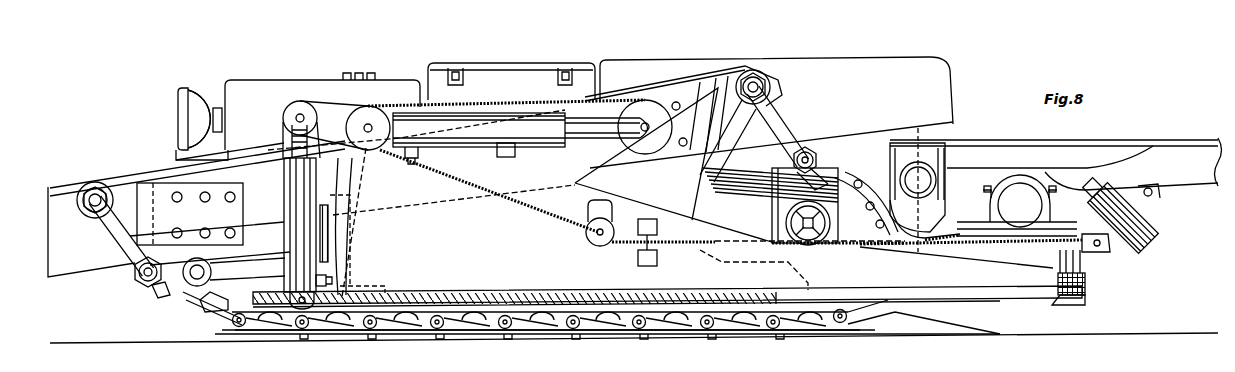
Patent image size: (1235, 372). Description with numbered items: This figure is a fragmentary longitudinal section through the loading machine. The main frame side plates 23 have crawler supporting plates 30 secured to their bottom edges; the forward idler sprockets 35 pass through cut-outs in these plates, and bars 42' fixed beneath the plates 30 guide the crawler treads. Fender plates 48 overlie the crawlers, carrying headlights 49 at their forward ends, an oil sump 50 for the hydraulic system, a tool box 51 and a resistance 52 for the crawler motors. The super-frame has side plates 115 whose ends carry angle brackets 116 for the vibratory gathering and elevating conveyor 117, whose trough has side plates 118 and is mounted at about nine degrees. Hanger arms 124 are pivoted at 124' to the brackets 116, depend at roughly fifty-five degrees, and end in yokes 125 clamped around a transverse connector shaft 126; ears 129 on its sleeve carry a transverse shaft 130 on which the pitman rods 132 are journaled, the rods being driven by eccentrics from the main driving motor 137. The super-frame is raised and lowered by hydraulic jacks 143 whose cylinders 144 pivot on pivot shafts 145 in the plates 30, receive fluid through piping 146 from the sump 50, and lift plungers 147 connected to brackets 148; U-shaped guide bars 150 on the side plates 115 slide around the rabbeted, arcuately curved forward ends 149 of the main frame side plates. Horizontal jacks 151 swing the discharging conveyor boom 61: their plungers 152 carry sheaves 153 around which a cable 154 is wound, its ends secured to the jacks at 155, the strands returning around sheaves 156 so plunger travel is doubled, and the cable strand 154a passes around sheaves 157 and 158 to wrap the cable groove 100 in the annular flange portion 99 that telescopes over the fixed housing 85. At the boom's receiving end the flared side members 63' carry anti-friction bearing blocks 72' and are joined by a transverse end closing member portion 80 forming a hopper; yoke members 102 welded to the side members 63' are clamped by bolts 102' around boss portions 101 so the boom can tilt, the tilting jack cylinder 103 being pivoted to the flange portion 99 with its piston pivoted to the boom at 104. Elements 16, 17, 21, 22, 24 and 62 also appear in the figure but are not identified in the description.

The section line 16 is at (898, 133).
The section line 17 is at (65, 175).
The ground surface 21 is at (956, 334).
The crawler track 22 is at (426, 340).
The main frame side plates 23 is at (455, 239).
The base plate 24 is at (988, 300).
The crawler supporting plates 30 is at (598, 335).
The forward idler sprockets 35 is at (240, 318).
The bars 42' is at (540, 340).
The fender plates 48 is at (178, 130).
The headlights 49 is at (198, 96).
The oil sump 50 is at (282, 80).
The tool box 51 is at (506, 70).
The resistance 52 is at (664, 62).
The discharging conveyor boom 61 is at (1163, 140).
The conveyor frame upper plate 62 is at (1123, 142).
The outwardly flared upper portions of side plates 63' is at (1054, 132).
The anti-friction bearing blocks 72' is at (943, 185).
The transverse end closing member portion 80 is at (890, 158).
The fixed housing 85 is at (1090, 282).
The annular flange portion 99 is at (1090, 256).
The cable groove 100 is at (980, 244).
The boss portions 101 is at (1045, 192).
The yoke members 102 is at (1028, 171).
The bolts 102' is at (1001, 205).
The cylinder 103 is at (1140, 232).
The pivotal connection of piston to boom 104 is at (1160, 196).
The side plates of super-frame 115 is at (706, 165).
The angle brackets 116 is at (130, 178).
The vibratory gathering and elevating conveyor 117 is at (726, 66).
The side plates of conveyor trough 118 is at (858, 72).
The hanger arms 124 is at (452, 181).
The pivot 124' is at (450, 142).
The yokes 125 is at (138, 280).
The transverse connector shaft 126 is at (155, 296).
The vertical flanges or ears 129 is at (172, 233).
The transverse shaft 130 is at (205, 238).
The pitman or connecting rods 132 is at (245, 265).
The main driving motor 137 is at (722, 190).
The hydraulic jacks 143 is at (285, 186).
The cylinders 144 is at (312, 182).
The pivot shafts 145 is at (303, 315).
The piping 146 is at (332, 280).
The plungers 147 is at (292, 135).
The brackets 148 is at (284, 108).
The forward ends of main frame side plates 149 is at (345, 200).
The guide bars 150 is at (330, 240).
The horizontally disposed jacks 151 is at (476, 150).
The plungers 152 is at (575, 140).
The sheaves 153 is at (625, 148).
The cable 154 is at (510, 104).
The cable strand 154a is at (490, 200).
The cable end securement 155 is at (505, 157).
The sheaves 156 is at (380, 112).
The sheave 157 is at (590, 246).
The sheave 158 is at (640, 250).